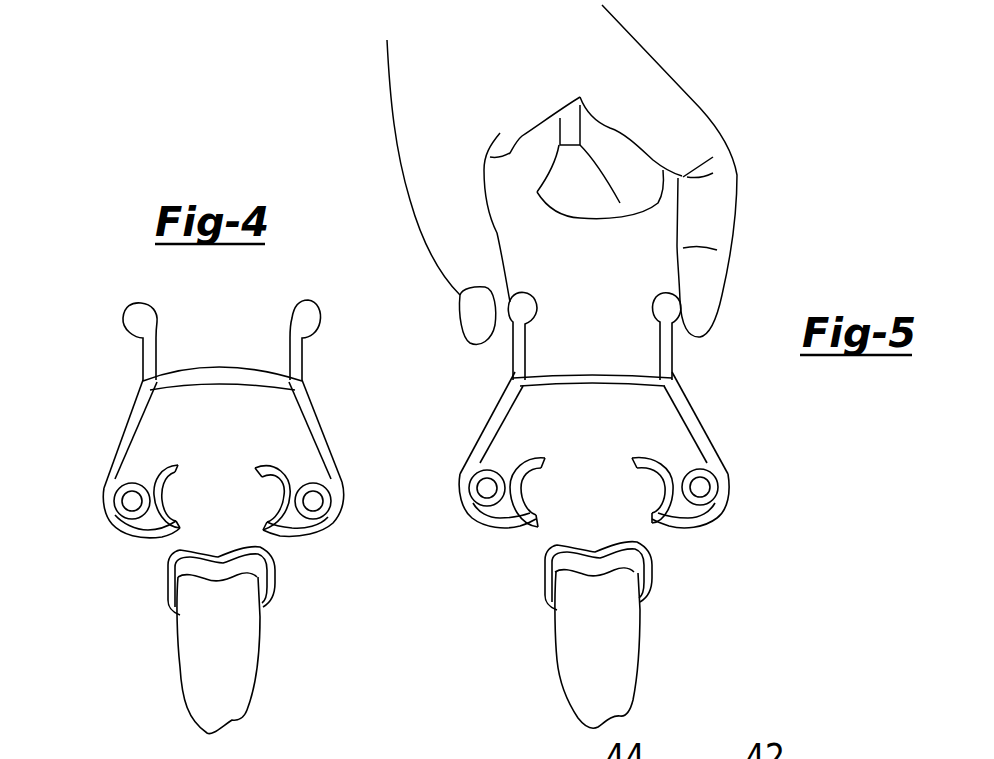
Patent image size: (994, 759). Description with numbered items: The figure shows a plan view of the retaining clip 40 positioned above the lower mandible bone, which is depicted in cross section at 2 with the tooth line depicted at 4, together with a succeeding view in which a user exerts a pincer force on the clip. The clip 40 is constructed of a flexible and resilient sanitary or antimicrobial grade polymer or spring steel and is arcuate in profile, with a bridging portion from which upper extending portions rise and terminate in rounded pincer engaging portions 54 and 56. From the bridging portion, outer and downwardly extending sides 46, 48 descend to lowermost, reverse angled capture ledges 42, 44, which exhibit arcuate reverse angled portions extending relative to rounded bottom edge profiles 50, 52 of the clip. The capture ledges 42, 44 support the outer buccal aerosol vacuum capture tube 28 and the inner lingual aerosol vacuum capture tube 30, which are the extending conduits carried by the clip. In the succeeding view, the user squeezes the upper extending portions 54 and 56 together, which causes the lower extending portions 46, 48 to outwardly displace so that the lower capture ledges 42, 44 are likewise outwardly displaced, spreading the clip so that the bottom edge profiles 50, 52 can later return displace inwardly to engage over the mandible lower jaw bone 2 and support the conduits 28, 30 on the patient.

In FIG. 4, the lower mandible bone 2 is at (180, 665).
In FIG. 5, the lower mandible bone 2 is at (557, 660).
In FIG. 4, the tooth line 4 is at (273, 573).
In FIG. 5, the tooth line 4 is at (640, 597).
In FIG. 4, the outer buccal aerosol vacuum capture tube 28 is at (110, 523).
In FIG. 5, the outer buccal aerosol vacuum capture tube 28 is at (483, 520).
In FIG. 4, the inner lingual aerosol vacuum capture tube 30 is at (333, 472).
In FIG. 5, the inner lingual aerosol vacuum capture tube 30 is at (707, 527).
In FIG. 4, the retaining clip 40 is at (213, 367).
In FIG. 5, the retaining clip 40 is at (577, 380).
In FIG. 4, the capture ledge 42 is at (196, 482).
In FIG. 5, the capture ledge 42 is at (545, 480).
In FIG. 4, the capture ledge 44 is at (257, 465).
In FIG. 5, the capture ledge 44 is at (647, 493).
In FIG. 4, the outer downwardly extending side 46 is at (117, 427).
In FIG. 5, the outer downwardly extending side 46 is at (500, 410).
In FIG. 4, the outer downwardly extending side 48 is at (320, 428).
In FIG. 5, the outer downwardly extending side 48 is at (700, 424).
In FIG. 4, the rounded bottom edge profile 50 is at (138, 538).
In FIG. 5, the rounded bottom edge profile 50 is at (517, 530).
In FIG. 4, the rounded bottom edge profile 52 is at (317, 537).
In FIG. 5, the rounded bottom edge profile 52 is at (687, 533).
In FIG. 4, the pincer engaging portion 54 is at (125, 317).
In FIG. 5, the pincer engaging portion 54 is at (517, 292).
In FIG. 4, the pincer engaging portion 56 is at (320, 313).
In FIG. 5, the pincer engaging portion 56 is at (658, 292).